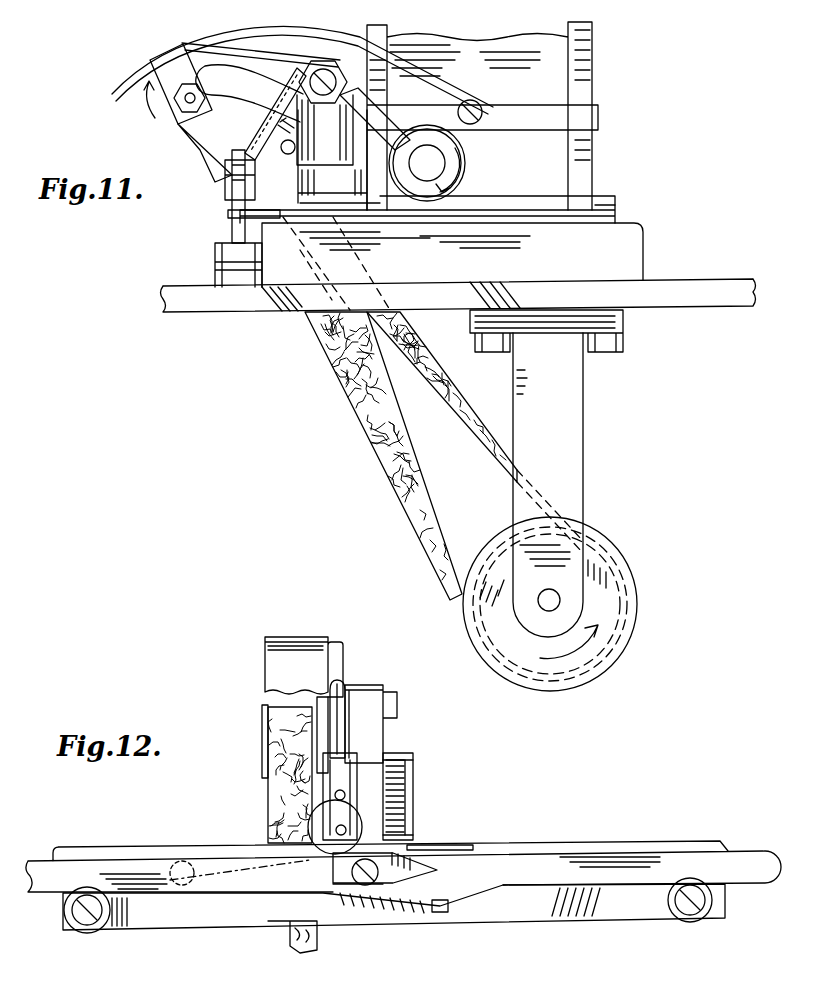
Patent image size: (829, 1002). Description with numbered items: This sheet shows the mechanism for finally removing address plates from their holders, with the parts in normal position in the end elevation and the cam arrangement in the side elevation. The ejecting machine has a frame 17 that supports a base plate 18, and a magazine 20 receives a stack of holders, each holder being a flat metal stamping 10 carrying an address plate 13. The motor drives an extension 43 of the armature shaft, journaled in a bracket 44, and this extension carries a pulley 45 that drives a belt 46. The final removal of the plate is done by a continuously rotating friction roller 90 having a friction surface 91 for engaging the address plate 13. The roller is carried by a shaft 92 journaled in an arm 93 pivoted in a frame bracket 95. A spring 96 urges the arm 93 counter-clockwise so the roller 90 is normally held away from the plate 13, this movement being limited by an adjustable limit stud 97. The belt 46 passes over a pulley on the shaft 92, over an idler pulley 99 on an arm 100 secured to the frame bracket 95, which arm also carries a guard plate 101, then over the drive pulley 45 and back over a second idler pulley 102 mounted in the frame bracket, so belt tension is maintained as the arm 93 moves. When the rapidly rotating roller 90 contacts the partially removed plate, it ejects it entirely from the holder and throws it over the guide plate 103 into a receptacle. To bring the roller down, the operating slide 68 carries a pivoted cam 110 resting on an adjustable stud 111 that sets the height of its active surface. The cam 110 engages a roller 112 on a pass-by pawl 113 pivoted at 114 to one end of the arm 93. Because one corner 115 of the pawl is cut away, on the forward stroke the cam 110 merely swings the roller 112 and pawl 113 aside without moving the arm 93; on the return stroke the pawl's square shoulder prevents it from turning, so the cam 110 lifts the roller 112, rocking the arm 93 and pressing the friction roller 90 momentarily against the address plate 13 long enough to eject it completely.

In FIG. 11, the flat metal stamping 10 is at (533, 212).
In FIG. 11, the address plate 13 is at (500, 202).
In FIG. 11, the frame 17 is at (702, 290).
In FIG. 11, the base plate 18 is at (633, 240).
In FIG. 12, the base plate 18 is at (200, 924).
In FIG. 11, the magazine 20 is at (590, 30).
In FIG. 11, the extension of the armature shaft 43 is at (548, 598).
In FIG. 11, the bracket 44 is at (574, 416).
In FIG. 11, the pulley 45 is at (613, 558).
In FIG. 11, the belt 46 is at (414, 453).
In FIG. 12, the belt 46 is at (268, 812).
In FIG. 11, the operating slide 68 is at (230, 228).
In FIG. 12, the operating slide 68 is at (532, 860).
In FIG. 11, the friction roller 90 is at (454, 164).
In FIG. 12, the friction roller 90 is at (410, 776).
In FIG. 11, the friction surface 91 is at (450, 184).
In FIG. 12, the friction surface 91 is at (398, 754).
In FIG. 11, the shaft 92 is at (424, 152).
In FIG. 11, the arm 93 is at (316, 98).
In FIG. 12, the arm 93 is at (344, 688).
In FIG. 11, the frame bracket 95 is at (341, 72).
In FIG. 12, the frame bracket 95 is at (378, 688).
In FIG. 11, the spring 96 is at (364, 154).
In FIG. 11, the adjustable limit stud 97 is at (299, 140).
In FIG. 11, the idler pulley 99 is at (168, 116).
In FIG. 12, the idler pulley 99 is at (264, 748).
In FIG. 11, the arm 100 is at (298, 58).
In FIG. 11, the guard plate 101 is at (316, 28).
In FIG. 12, the guard plate 101 is at (286, 640).
In FIG. 11, the second idler pulley 102 is at (262, 140).
In FIG. 11, the guide plate 103 is at (286, 224).
In FIG. 11, the pivoted cam 110 is at (230, 218).
In FIG. 12, the pivoted cam 110 is at (438, 856).
In FIG. 12, the adjustable stud 111 is at (452, 914).
In FIG. 11, the roller 112 is at (230, 200).
In FIG. 12, the roller 112 is at (330, 874).
In FIG. 11, the pass-by pawl 113 is at (226, 177).
In FIG. 12, the pass-by pawl 113 is at (346, 824).
In FIG. 12, the pivot 114 is at (343, 792).
In FIG. 12, the cut-away corner 115 is at (322, 848).